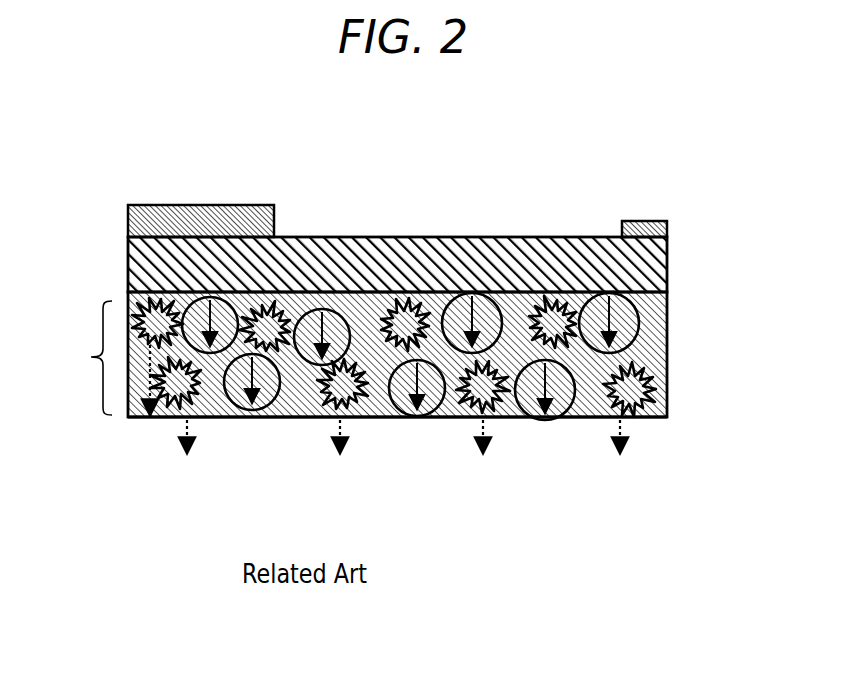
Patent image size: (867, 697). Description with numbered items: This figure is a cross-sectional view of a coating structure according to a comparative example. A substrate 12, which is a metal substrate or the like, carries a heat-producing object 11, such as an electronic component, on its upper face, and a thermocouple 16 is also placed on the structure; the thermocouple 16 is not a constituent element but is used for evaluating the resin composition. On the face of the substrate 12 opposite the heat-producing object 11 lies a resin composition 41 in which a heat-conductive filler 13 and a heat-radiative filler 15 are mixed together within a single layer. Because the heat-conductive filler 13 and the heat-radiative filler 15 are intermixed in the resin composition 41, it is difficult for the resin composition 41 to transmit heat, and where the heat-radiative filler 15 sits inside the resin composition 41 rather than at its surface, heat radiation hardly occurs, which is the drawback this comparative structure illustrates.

The heat-producing object 11 is at (247, 215).
The substrate 12 is at (465, 253).
The heat-conductive filler 13 is at (627, 323).
The heat-radiative filler 15 is at (662, 415).
The thermocouple 16 is at (645, 222).
The resin composition 41 is at (85, 358).